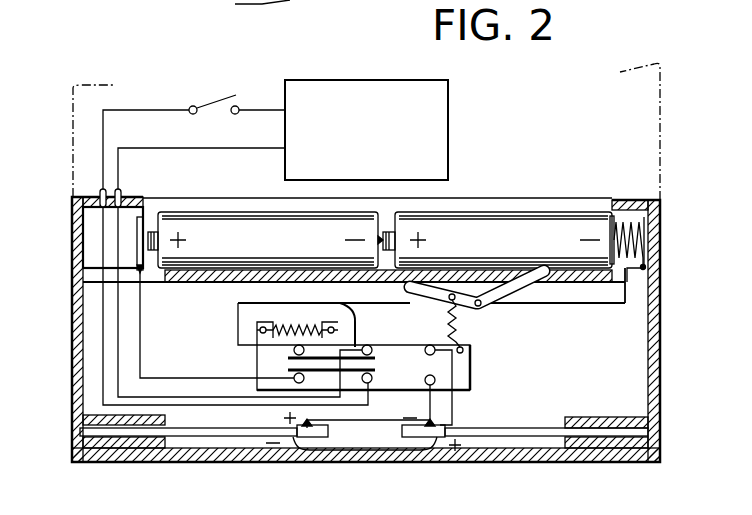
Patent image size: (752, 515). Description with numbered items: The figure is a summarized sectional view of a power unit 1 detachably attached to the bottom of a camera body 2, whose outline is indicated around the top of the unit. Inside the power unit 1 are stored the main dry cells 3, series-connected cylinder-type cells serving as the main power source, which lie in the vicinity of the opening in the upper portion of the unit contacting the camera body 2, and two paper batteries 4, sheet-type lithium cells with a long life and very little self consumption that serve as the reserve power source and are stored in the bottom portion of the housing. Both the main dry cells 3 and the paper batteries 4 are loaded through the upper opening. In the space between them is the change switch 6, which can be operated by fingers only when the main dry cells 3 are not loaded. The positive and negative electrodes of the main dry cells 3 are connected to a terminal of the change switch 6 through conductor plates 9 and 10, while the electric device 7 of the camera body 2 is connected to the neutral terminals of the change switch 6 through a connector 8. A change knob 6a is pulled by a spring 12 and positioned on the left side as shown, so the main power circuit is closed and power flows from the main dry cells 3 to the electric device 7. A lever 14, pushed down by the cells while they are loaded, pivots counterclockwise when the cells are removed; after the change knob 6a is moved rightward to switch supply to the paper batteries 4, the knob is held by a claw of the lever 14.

The power unit 1 is at (72, 244).
The camera body 2 is at (72, 148).
The main dry cells 3 is at (252, 212).
The paper batteries 4 is at (220, 430).
The change switch 6 is at (475, 360).
The change knob 6a is at (357, 320).
The electric device 7 is at (450, 127).
The connector 8 is at (96, 189).
The conductor plate 9 is at (150, 220).
The conductor plate 10 is at (646, 241).
The spring 12 is at (238, 308).
The lever 14 is at (505, 292).